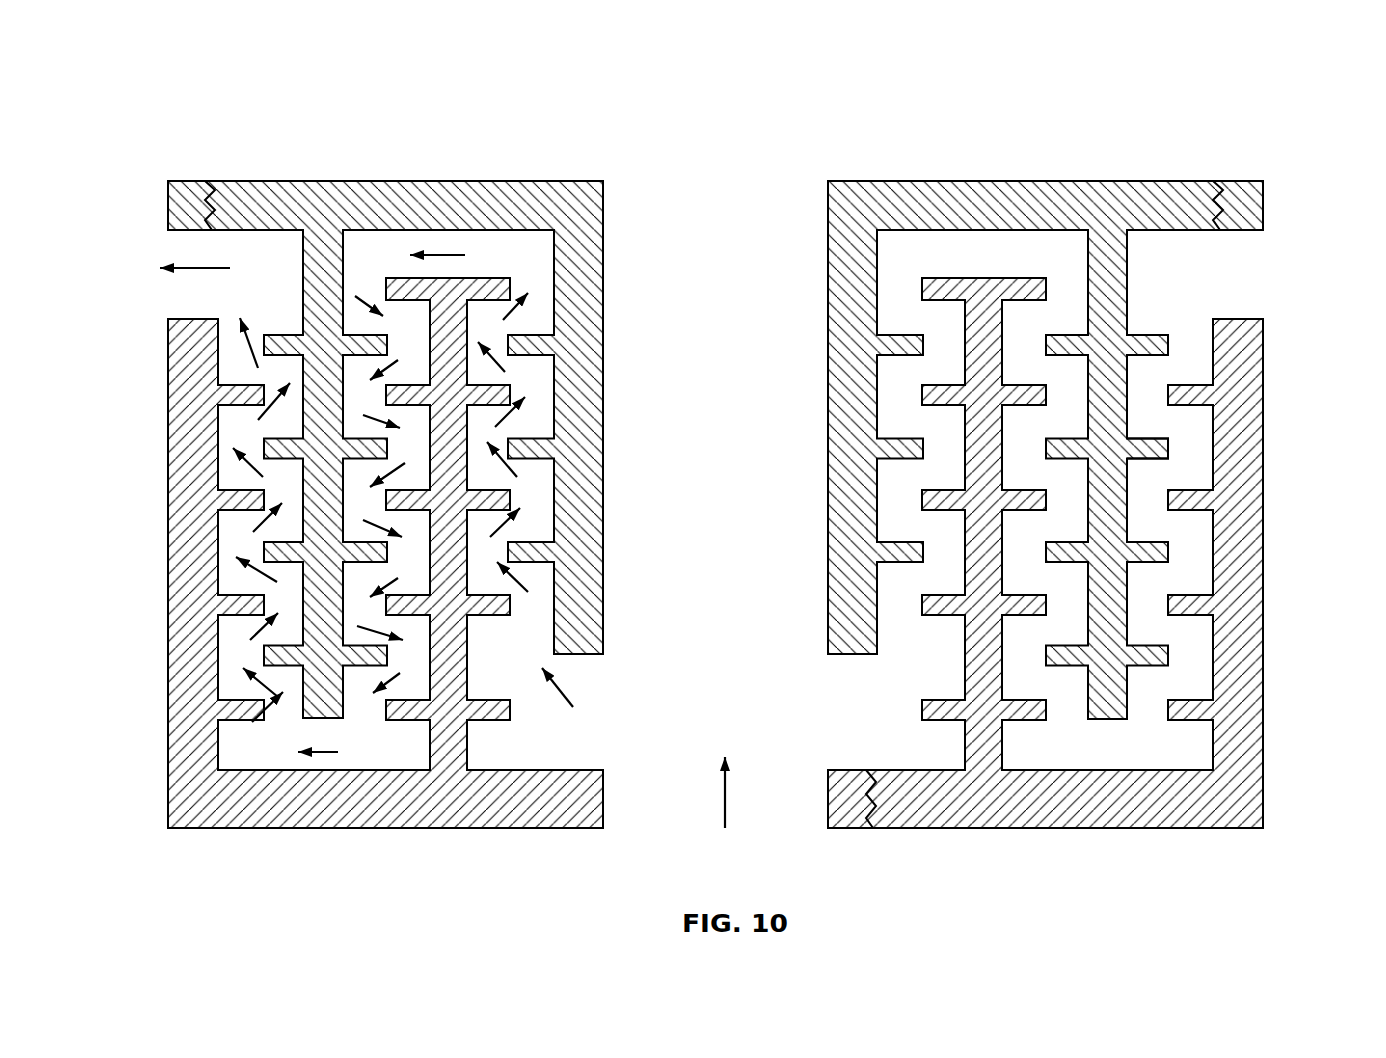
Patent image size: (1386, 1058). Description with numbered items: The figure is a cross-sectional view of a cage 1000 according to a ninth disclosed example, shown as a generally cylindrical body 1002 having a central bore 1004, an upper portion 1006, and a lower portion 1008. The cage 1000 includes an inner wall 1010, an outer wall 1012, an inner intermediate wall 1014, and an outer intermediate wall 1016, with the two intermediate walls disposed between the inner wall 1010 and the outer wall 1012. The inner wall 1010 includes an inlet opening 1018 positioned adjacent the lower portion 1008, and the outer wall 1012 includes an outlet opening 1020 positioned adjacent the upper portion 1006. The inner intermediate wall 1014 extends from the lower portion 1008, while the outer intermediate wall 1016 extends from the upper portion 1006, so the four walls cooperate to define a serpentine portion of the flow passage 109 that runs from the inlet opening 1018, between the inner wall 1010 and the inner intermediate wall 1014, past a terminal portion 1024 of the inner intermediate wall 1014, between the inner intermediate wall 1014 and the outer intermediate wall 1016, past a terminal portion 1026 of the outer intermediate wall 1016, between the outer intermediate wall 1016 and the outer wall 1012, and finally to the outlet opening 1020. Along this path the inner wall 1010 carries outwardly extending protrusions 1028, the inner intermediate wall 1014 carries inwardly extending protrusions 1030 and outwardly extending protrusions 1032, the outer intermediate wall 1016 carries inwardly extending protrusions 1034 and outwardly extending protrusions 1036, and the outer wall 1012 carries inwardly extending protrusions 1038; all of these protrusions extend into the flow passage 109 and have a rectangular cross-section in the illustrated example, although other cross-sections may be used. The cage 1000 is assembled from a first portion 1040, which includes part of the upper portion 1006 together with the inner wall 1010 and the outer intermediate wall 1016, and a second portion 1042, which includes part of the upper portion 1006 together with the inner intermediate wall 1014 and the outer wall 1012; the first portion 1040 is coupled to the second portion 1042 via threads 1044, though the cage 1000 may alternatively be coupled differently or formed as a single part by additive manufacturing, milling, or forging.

The cage 1000 is at (223, 58).
The body 1002 is at (232, 645).
The central bore 1004 is at (827, 502).
The upper portion 1006 is at (405, 181).
The lower portion 1008 is at (383, 813).
The inner wall 1010 is at (583, 397).
The outer wall 1012 is at (1246, 353).
The inner intermediate wall 1014 is at (455, 760).
The outer intermediate wall 1016 is at (320, 478).
The inlet opening 1018 is at (580, 650).
The outlet opening 1020 is at (193, 318).
The terminal portion 1024 is at (512, 290).
The terminal portion 1026 is at (300, 713).
The outwardly extending protrusions 1028 is at (537, 552).
The inwardly extending protrusions 1030 is at (945, 392).
The outwardly extending protrusions 1032 is at (1002, 503).
The inwardly extending protrusions 1034 is at (1050, 345).
The outwardly extending protrusions 1036 is at (1166, 447).
The inwardly extending protrusions 1038 is at (1191, 710).
The first portion 1040 is at (492, 200).
The second portion 1042 is at (513, 813).
The threads 1044 is at (210, 181).
The flow passage 109 is at (228, 583).